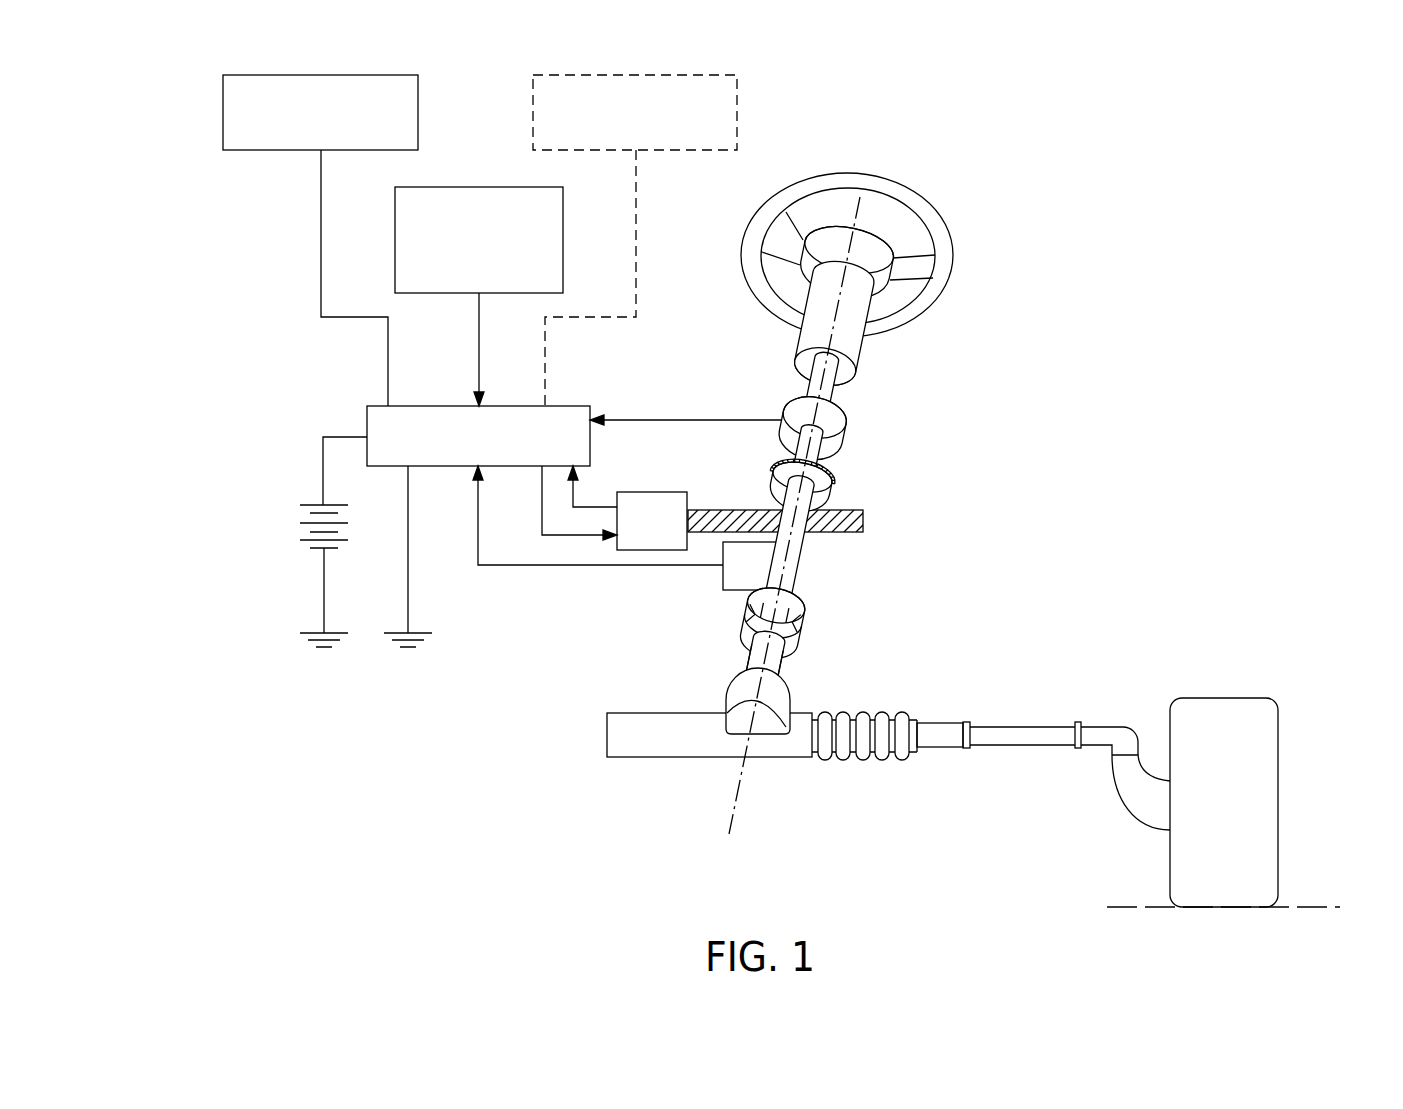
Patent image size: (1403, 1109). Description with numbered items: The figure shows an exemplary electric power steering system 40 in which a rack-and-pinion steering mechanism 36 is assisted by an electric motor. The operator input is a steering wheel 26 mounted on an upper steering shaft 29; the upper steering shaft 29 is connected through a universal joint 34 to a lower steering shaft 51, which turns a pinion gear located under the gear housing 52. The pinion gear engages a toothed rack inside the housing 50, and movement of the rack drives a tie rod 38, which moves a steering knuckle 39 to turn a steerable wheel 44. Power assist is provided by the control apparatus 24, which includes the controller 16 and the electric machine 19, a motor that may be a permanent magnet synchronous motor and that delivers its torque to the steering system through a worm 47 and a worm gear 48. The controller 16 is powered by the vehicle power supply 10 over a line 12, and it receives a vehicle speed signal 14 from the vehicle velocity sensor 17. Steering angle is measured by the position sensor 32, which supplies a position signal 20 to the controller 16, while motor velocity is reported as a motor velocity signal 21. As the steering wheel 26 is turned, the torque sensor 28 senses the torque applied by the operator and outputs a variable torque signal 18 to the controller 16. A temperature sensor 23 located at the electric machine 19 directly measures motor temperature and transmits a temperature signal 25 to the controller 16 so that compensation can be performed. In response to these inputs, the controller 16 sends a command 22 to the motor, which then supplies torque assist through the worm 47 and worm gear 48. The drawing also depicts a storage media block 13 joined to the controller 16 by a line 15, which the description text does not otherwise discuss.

The vehicle power supply 10 is at (310, 505).
The line 12 is at (348, 436).
The storage media 13 is at (223, 112).
The vehicle speed signal 14 is at (480, 372).
The storage media connection 15 is at (323, 190).
The controller 16 is at (445, 406).
The vehicle velocity sensor 17 is at (480, 187).
The variable torque signal 18 is at (713, 420).
The electric machine 19 is at (648, 492).
The position signal 20 is at (498, 567).
The motor velocity signal 21 is at (584, 505).
The command 22 is at (565, 537).
The temperature sensor 23 is at (737, 112).
The control apparatus 24 is at (1062, 392).
The temperature signal 25 is at (636, 200).
The steering wheel 26 is at (917, 212).
The torque sensor 28 is at (830, 423).
The upper steering shaft 29 is at (830, 378).
The position sensor 32 is at (723, 578).
The universal joint 34 is at (800, 614).
The steering mechanism 36 is at (880, 712).
The tie rod 38 is at (1005, 733).
The steering knuckle 39 is at (1130, 795).
The electric power steering system 40 is at (1167, 512).
The steerable wheel 44 is at (1237, 717).
The worm 47 is at (853, 523).
The worm gear 48 is at (824, 486).
The housing 50 is at (633, 740).
The lower steering shaft 51 is at (772, 669).
The gear housing 52 is at (737, 698).